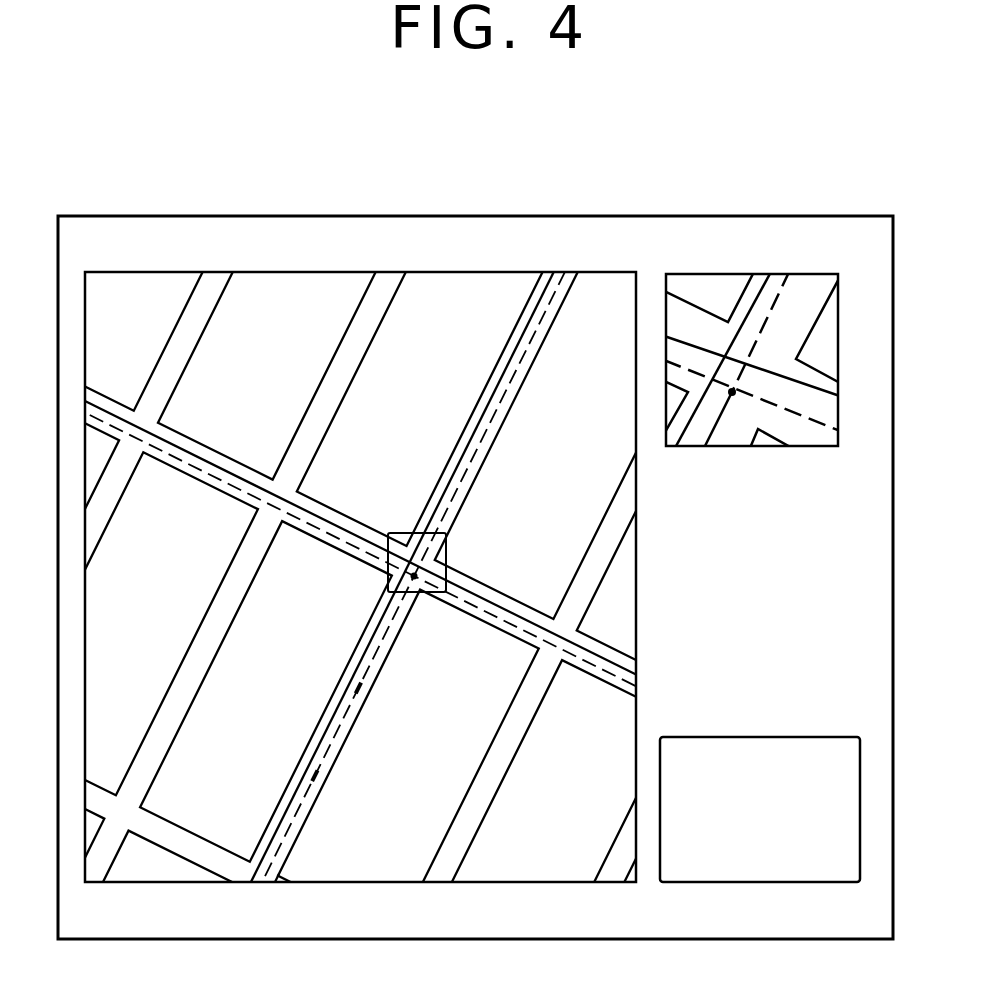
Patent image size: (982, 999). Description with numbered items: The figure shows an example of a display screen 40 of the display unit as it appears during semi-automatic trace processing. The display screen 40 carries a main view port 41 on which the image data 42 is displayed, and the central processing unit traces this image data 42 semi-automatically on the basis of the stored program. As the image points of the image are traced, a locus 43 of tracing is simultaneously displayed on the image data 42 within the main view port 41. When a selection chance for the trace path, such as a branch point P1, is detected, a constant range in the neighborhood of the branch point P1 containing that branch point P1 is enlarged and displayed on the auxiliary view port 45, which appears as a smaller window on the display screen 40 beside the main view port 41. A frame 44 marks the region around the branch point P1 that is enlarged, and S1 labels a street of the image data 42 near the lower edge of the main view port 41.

The display screen 40 is at (745, 216).
The main view port 41 is at (505, 272).
The image data 42 is at (618, 598).
The locus of tracing 43 is at (339, 728).
The enlargement frame 44 is at (400, 533).
The auxiliary view port 45 is at (740, 275).
The branch point P1 is at (416, 580).
The street S1 is at (271, 882).